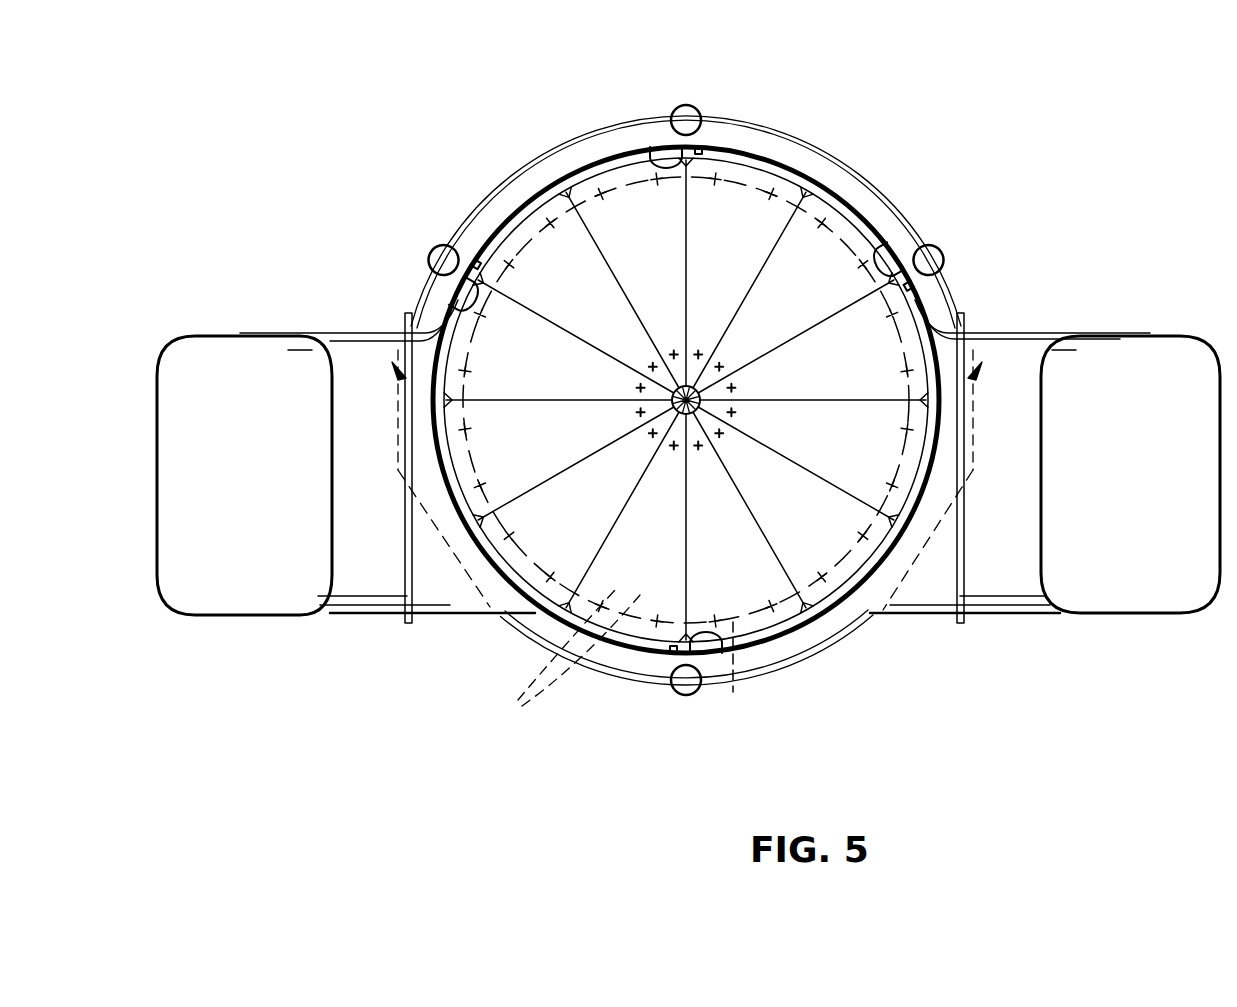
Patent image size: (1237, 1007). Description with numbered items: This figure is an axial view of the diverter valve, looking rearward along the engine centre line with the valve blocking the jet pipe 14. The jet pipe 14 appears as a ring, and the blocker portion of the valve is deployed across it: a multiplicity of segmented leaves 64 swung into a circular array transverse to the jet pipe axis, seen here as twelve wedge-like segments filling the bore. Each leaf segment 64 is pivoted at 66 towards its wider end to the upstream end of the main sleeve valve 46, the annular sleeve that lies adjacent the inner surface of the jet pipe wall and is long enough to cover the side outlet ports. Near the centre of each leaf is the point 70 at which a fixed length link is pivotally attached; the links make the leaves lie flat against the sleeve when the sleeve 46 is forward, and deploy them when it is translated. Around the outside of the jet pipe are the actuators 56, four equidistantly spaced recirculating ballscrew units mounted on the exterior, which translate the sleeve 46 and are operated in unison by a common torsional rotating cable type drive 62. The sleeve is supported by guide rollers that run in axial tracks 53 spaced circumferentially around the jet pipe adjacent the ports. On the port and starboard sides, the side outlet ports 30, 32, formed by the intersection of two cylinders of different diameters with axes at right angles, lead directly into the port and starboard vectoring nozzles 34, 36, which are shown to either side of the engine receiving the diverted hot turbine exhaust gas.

The jet pipe 14 is at (760, 150).
The port side outlet port 30 is at (398, 370).
The starboard side outlet port 32 is at (975, 372).
The port vectoring nozzle 34 is at (205, 612).
The starboard vectoring nozzle 36 is at (1150, 610).
The sleeve valve 46 is at (733, 688).
The axial tracks 53 is at (655, 150).
The actuators 56 is at (684, 112).
The torsional rotating cable type drive 62 is at (870, 185).
The segmented leaves 64 is at (686, 400).
The leaf pivot 66 is at (685, 598).
The link attachment point on leaf 70 is at (676, 450).